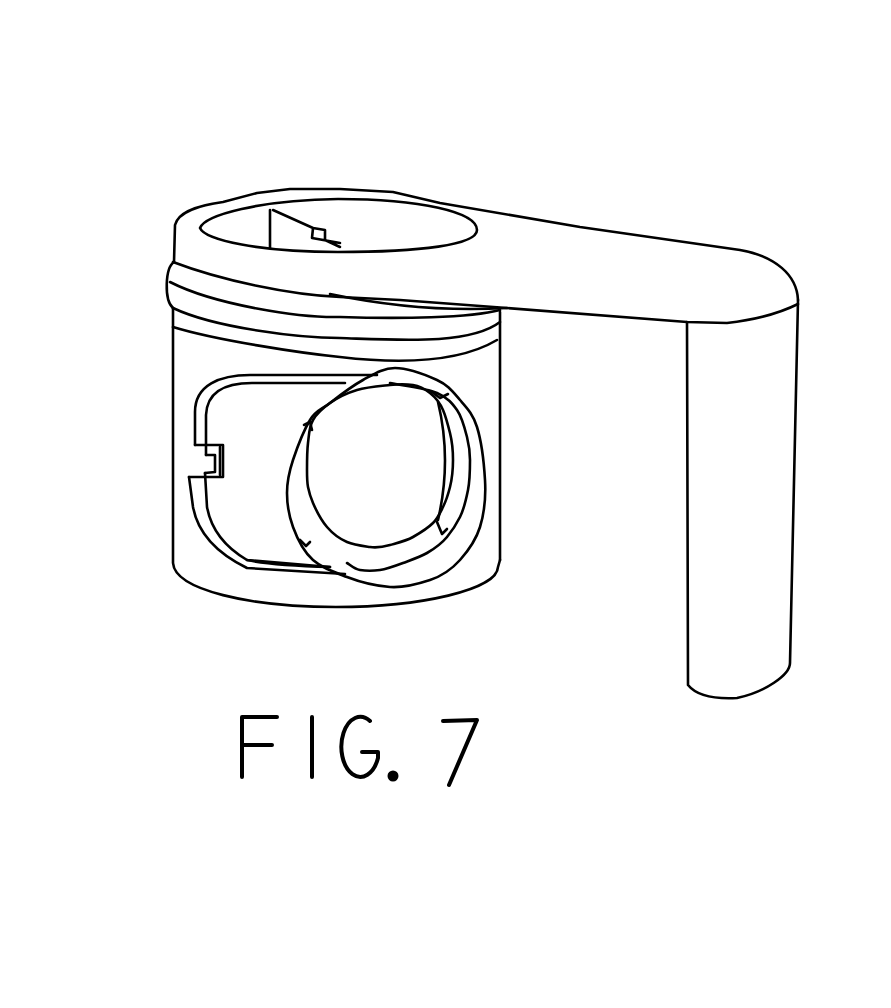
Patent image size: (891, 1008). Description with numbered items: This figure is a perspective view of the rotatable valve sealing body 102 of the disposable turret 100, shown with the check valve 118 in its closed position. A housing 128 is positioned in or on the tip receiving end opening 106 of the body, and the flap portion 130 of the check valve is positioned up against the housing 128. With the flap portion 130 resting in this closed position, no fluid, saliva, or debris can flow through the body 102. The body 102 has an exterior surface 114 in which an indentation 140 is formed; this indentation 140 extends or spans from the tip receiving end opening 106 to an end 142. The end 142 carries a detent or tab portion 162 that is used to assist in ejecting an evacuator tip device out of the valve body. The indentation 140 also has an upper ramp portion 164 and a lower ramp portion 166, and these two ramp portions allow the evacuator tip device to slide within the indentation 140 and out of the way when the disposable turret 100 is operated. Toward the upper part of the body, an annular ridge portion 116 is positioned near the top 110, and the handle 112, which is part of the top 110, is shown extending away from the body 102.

The disposable turret 100 is at (382, 118).
The rotatable valve sealing body 102 is at (518, 622).
The tip receiving end opening 106 is at (503, 455).
The top 110 is at (445, 232).
The handle 112 is at (773, 484).
The exterior surface 114 is at (188, 362).
The annular ridge portion 116 is at (168, 288).
The check valve 118 is at (483, 405).
The housing 128 is at (468, 492).
The flap portion 130 is at (340, 512).
The indentation 140 is at (250, 537).
The end 142 is at (193, 422).
The detent or tab portion 162 is at (198, 460).
The upper ramp portion 164 is at (223, 390).
The lower ramp portion 166 is at (307, 572).